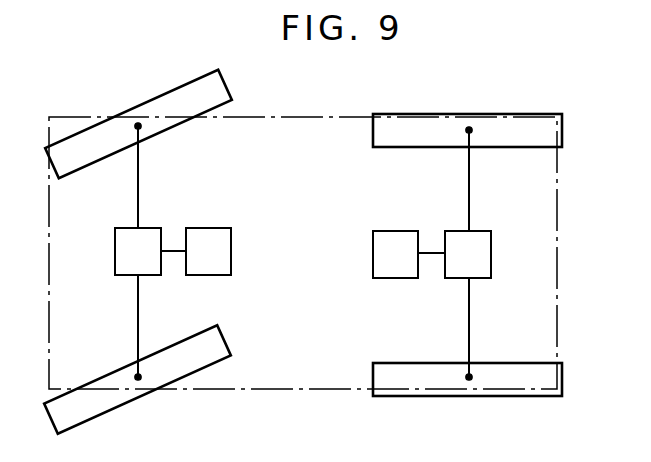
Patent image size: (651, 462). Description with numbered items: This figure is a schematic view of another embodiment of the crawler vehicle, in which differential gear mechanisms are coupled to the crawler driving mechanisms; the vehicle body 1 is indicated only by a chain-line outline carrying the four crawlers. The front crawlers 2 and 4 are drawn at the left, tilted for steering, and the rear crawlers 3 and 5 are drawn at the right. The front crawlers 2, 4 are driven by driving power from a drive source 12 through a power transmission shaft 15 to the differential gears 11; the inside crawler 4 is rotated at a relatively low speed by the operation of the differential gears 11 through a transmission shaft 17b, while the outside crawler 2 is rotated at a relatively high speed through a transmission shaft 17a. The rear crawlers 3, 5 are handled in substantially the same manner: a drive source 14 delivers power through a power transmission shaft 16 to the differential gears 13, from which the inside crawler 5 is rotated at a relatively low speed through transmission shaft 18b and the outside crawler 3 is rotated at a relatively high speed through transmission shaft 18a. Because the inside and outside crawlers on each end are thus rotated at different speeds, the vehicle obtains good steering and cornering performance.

The vehicle body 1 is at (315, 118).
The front crawler 2 is at (92, 164).
The rear crawler 3 is at (372, 138).
The front crawler 4 is at (105, 377).
The rear crawler 5 is at (372, 362).
The differential gears 11 is at (162, 227).
The drive source 12 is at (212, 228).
The differential gears 13 is at (455, 230).
The drive source 14 is at (395, 230).
The power transmission shaft 15 is at (173, 252).
The power transmission shaft 16 is at (432, 254).
The transmission shaft 17a is at (140, 168).
The transmission shaft 17b is at (137, 317).
The transmission shaft 18a is at (470, 177).
The transmission shaft 18b is at (470, 327).